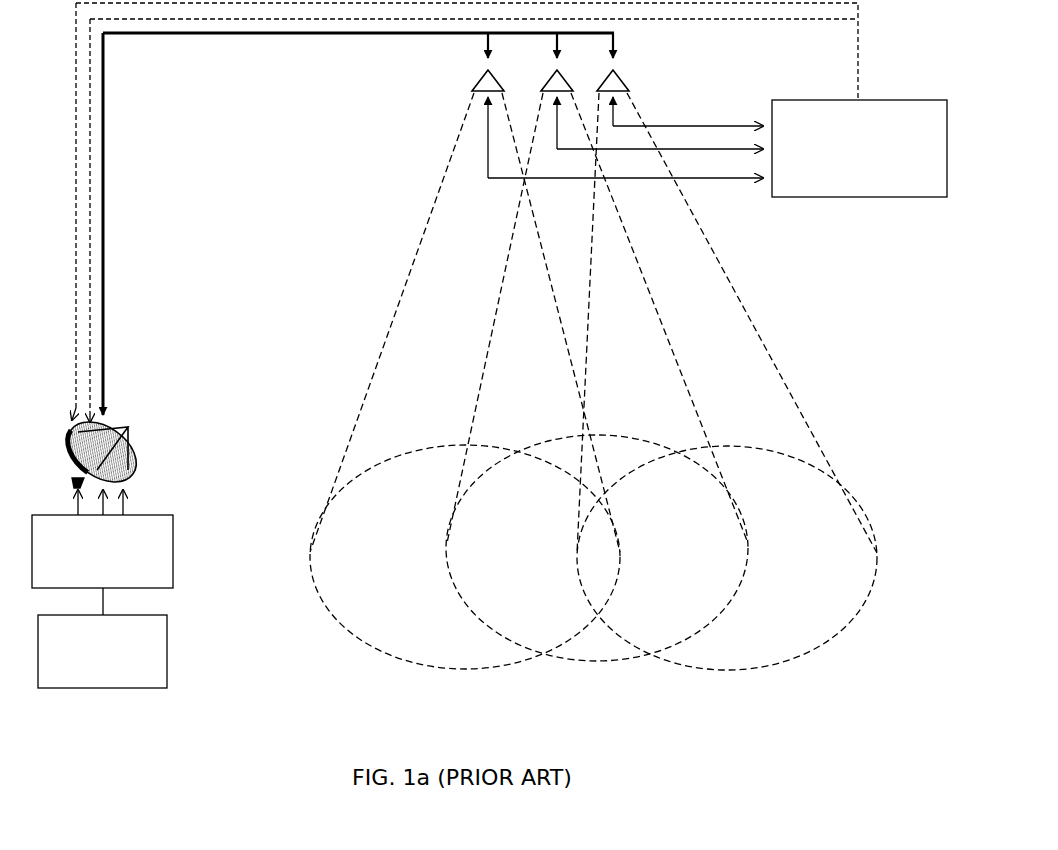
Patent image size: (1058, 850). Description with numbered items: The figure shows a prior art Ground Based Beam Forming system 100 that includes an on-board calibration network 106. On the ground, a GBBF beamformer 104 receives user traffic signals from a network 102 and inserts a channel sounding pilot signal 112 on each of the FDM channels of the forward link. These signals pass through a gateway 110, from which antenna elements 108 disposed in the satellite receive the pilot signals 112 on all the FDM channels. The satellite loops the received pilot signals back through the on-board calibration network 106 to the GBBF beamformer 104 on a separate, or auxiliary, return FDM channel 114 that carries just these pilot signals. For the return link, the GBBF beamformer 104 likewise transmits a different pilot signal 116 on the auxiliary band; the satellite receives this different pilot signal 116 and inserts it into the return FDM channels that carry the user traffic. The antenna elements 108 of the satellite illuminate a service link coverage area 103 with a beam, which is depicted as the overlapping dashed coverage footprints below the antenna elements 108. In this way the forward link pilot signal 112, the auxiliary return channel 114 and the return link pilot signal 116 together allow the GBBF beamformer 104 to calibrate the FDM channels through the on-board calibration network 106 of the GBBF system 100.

The GBBF system 100 is at (870, 288).
The network 102 is at (102, 638).
The service link coverage area 103 is at (757, 448).
The GBBF beamformer 104 is at (102, 539).
The on-board calibration network 106 is at (859, 148).
The antenna elements 108 is at (478, 91).
The gateway 110 is at (137, 468).
The channel sounding pilot signal 112 is at (103, 232).
The auxiliary return FDM channel 114 is at (90, 183).
The different pilot signal 116 is at (76, 105).